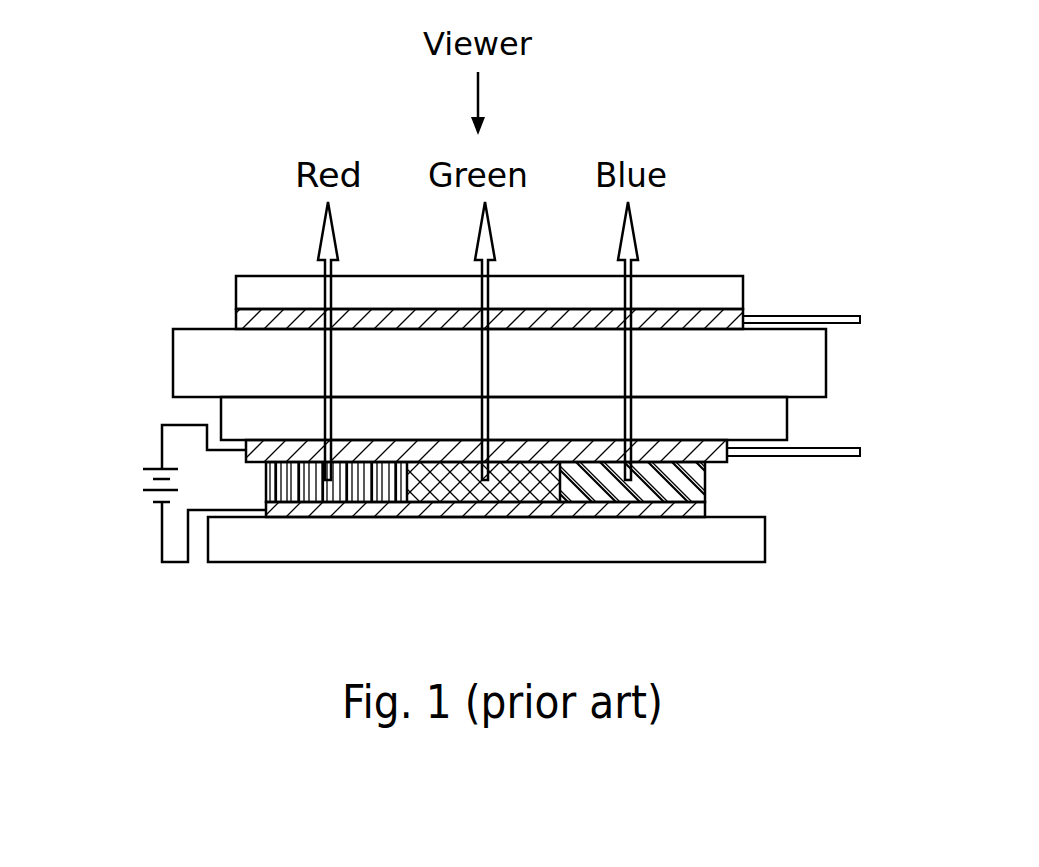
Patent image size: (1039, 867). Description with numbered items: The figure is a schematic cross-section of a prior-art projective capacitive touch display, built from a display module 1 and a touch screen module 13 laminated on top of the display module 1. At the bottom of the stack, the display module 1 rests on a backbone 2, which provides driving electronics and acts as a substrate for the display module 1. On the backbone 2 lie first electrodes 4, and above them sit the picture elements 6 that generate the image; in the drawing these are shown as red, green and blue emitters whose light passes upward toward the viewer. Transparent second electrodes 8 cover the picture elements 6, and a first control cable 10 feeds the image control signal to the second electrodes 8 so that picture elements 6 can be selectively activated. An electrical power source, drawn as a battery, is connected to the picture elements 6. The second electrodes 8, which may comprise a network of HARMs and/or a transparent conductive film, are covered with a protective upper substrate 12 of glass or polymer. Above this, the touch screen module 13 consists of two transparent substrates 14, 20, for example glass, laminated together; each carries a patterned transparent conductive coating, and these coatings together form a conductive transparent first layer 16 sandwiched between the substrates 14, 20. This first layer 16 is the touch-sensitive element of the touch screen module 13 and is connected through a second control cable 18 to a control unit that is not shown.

The display module 1 is at (103, 402).
The backbone 2 is at (278, 550).
The first electrodes 4 is at (692, 515).
The picture elements 6 is at (380, 480).
The second electrodes 8 is at (704, 453).
The first control cable 10 is at (852, 452).
The protective upper substrate 12 is at (232, 413).
The touch screen module 13 is at (138, 273).
The transparent substrate 14 is at (196, 366).
The conductive transparent first layer 16 is at (246, 323).
The second control cable 18 is at (853, 318).
The transparent substrate 20 is at (246, 294).